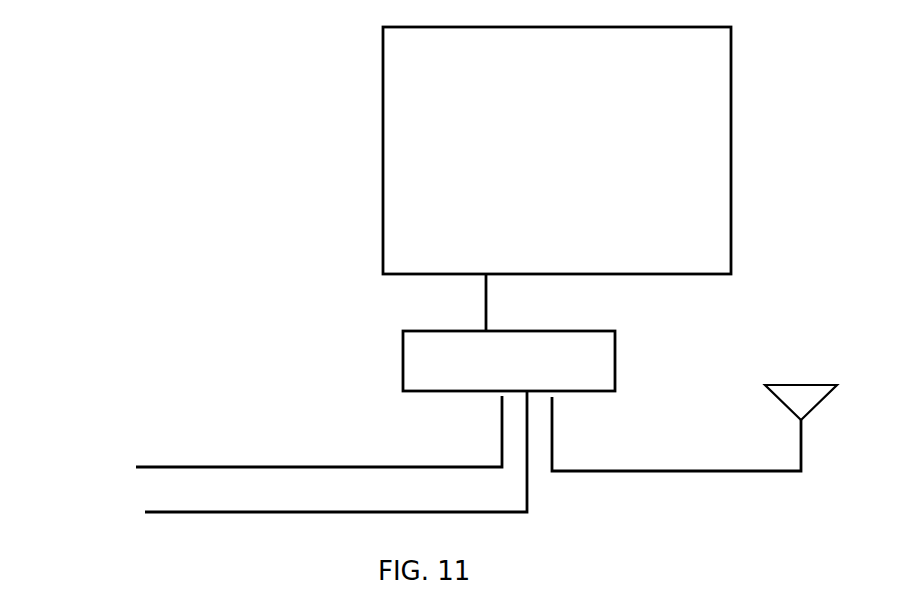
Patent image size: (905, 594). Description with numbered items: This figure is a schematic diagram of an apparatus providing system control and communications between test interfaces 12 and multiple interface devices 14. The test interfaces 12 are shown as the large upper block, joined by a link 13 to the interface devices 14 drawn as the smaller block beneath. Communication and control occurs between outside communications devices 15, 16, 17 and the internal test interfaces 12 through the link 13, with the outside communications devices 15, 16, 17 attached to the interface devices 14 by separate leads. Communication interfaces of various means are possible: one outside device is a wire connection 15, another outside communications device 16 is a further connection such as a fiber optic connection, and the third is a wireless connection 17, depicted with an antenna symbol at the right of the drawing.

The test interfaces 12 is at (380, 81).
The link 13 is at (466, 300).
The interface devices 14 is at (391, 364).
The wire connection 15 is at (170, 455).
The outside communications device 16 is at (167, 497).
The wireless connection 17 is at (855, 414).